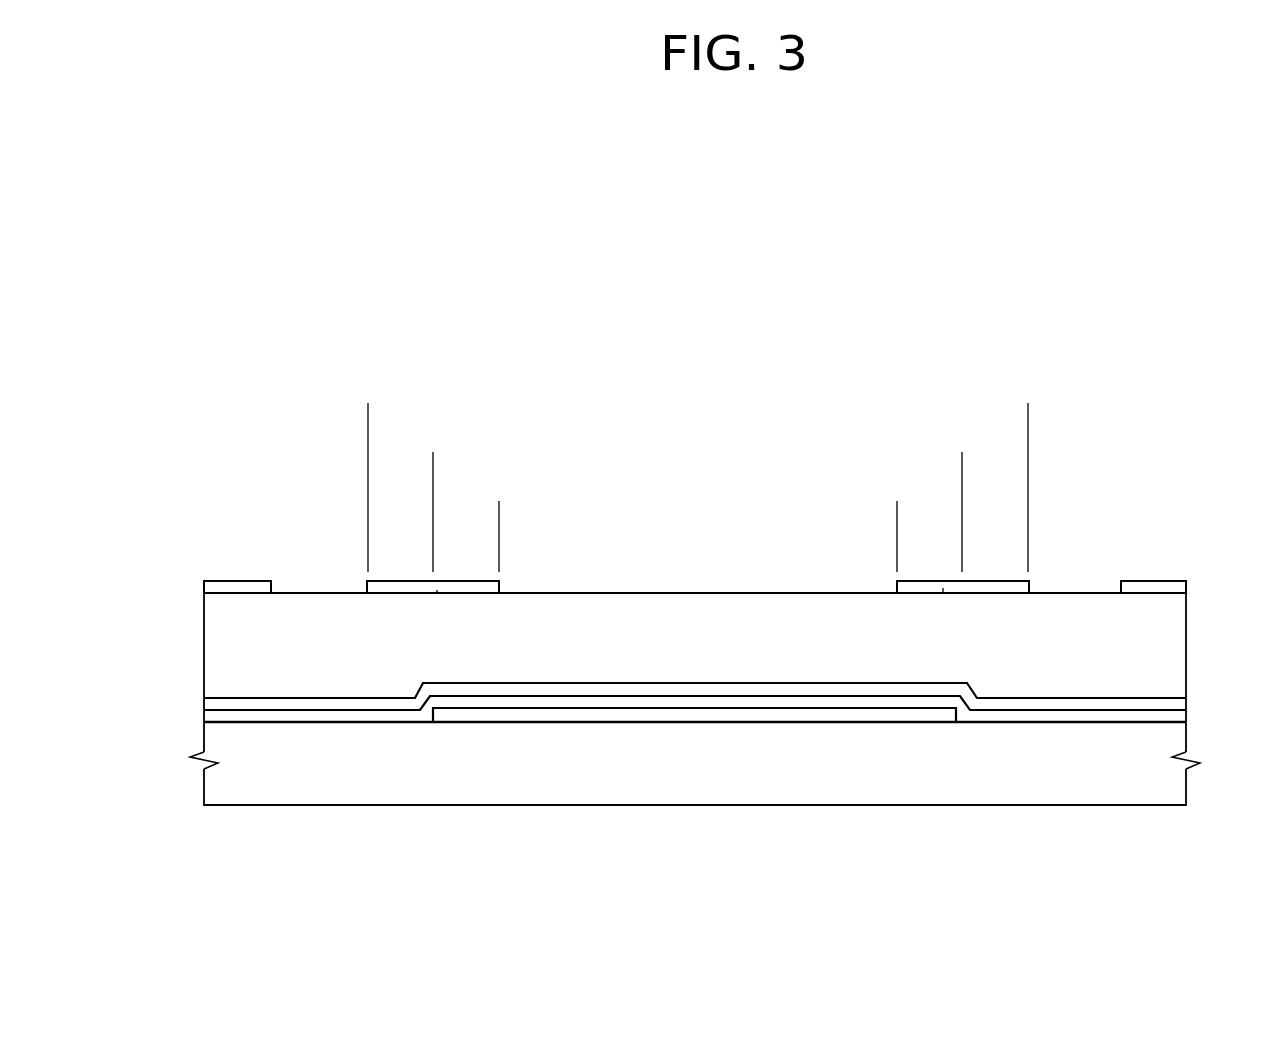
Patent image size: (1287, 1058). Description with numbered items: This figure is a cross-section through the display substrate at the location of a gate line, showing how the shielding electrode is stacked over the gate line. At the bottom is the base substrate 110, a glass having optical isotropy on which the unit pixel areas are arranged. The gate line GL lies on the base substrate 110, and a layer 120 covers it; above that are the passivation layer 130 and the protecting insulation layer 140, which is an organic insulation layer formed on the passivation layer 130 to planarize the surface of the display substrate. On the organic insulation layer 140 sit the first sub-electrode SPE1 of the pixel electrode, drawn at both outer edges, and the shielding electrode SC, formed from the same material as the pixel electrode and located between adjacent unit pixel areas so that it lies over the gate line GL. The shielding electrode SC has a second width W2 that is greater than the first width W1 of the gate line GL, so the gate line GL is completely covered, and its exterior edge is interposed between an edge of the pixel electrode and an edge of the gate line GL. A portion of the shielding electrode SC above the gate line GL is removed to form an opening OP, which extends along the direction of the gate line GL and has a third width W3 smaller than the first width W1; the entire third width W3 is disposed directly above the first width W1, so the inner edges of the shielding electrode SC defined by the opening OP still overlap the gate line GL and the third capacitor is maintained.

The base substrate 110 is at (1184, 773).
The gate insulating layer 120 is at (1182, 713).
The passivation layer 130 is at (1182, 700).
The protecting insulation layer 140 is at (1184, 656).
The gate line GL is at (605, 717).
The first sub-electrode SPE1 is at (204, 584).
The shielding electrode SC is at (437, 590).
The opening OP is at (684, 588).
The first width W1 is at (962, 457).
The second width W2 is at (1028, 408).
The third width W3 is at (897, 506).